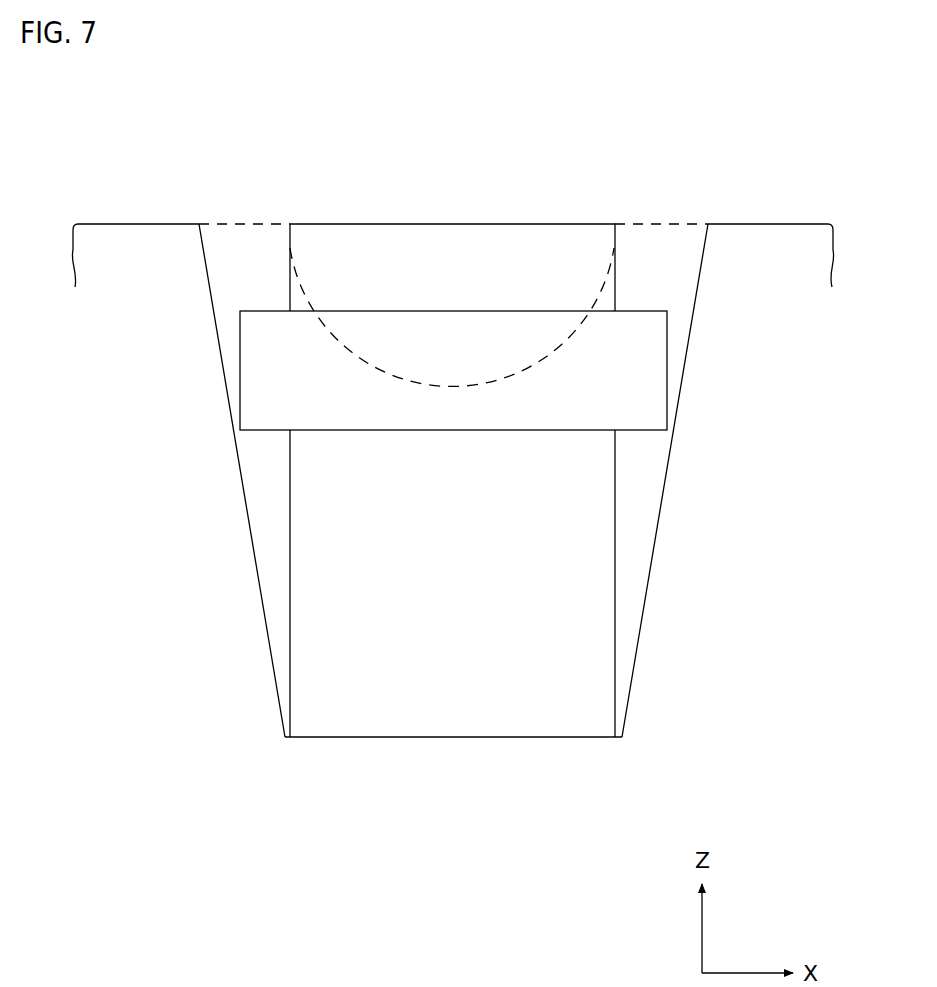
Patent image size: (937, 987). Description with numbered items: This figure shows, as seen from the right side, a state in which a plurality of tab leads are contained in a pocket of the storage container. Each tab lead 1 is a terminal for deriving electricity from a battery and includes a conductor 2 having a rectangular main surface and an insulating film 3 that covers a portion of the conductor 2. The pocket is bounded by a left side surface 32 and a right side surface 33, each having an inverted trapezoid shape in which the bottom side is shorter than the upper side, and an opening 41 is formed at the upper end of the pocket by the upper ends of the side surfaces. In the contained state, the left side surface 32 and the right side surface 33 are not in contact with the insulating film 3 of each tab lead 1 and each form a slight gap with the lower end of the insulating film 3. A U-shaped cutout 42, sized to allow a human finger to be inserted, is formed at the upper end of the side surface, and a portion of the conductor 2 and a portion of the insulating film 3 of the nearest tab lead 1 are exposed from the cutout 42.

The tab lead 1 is at (333, 194).
The conductor 2 is at (400, 254).
The insulating film 3 is at (265, 386).
The left side surface 32 is at (248, 490).
The right side surface 33 is at (665, 470).
The opening 41 is at (661, 243).
The cutout 42 is at (572, 335).